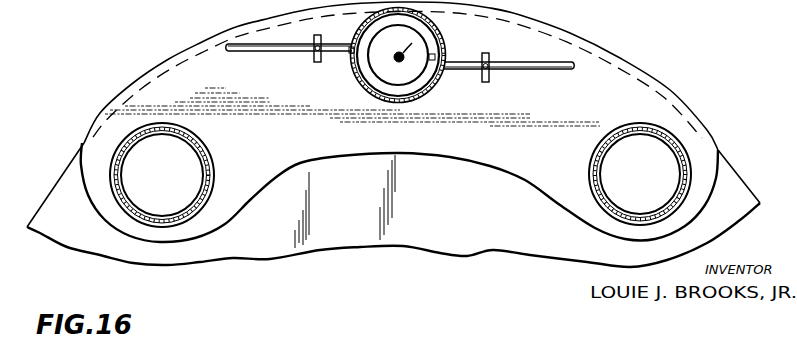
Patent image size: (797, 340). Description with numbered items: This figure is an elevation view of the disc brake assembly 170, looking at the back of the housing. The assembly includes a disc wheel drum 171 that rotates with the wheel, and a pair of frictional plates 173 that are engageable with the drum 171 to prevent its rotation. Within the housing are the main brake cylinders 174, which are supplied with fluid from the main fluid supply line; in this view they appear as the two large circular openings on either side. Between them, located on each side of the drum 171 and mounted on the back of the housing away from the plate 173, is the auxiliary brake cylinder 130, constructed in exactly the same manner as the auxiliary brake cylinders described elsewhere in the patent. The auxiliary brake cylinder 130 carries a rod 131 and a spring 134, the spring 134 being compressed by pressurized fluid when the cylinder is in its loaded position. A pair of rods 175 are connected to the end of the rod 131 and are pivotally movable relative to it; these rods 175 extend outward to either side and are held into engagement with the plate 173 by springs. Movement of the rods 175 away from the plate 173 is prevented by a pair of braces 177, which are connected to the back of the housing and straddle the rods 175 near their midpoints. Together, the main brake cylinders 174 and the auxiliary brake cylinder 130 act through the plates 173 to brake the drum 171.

The auxiliary brake cylinder 130 is at (403, 61).
The rod 131 is at (411, 50).
The spring 134 is at (440, 40).
The disc brake assembly 170 is at (696, 46).
The disc wheel drum 171 is at (449, 217).
The frictional plate 173 is at (608, 108).
The main brake cylinder 174 is at (214, 160).
The rod 175 is at (270, 52).
The brace 177 is at (313, 56).